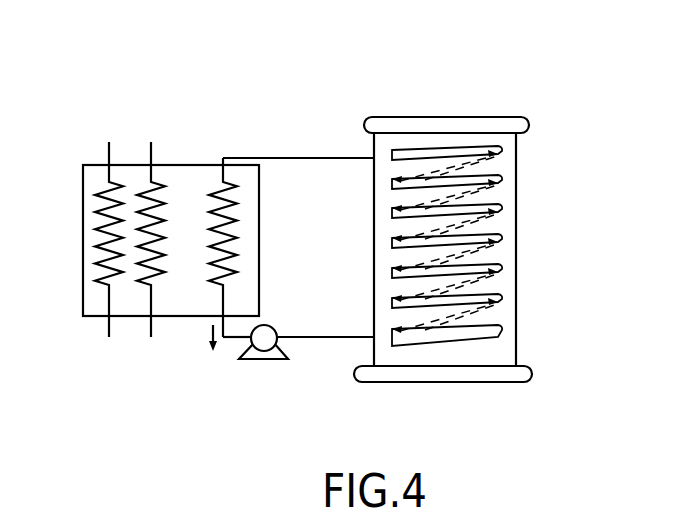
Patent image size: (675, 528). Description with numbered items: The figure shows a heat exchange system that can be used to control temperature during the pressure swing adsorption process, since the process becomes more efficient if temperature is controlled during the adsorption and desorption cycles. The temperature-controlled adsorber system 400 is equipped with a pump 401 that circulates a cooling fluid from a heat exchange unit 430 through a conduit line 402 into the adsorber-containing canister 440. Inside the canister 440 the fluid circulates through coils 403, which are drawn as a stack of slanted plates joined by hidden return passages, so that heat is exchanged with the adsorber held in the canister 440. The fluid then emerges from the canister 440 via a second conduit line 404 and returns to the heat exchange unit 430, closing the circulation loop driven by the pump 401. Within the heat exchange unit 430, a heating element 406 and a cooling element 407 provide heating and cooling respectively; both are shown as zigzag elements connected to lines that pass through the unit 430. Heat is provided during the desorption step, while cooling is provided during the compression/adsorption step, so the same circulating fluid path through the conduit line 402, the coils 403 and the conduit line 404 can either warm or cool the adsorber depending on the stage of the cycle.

The temperature-controlled adsorber system 400 is at (500, 77).
The pump 401 is at (255, 360).
The conduit line 402 is at (328, 338).
The coils 403 is at (500, 333).
The conduit line 404 is at (283, 157).
The heating element 406 is at (108, 143).
The cooling element 407 is at (152, 148).
The heat exchange unit 430 is at (82, 258).
The adsorber-containing canister 440 is at (516, 280).